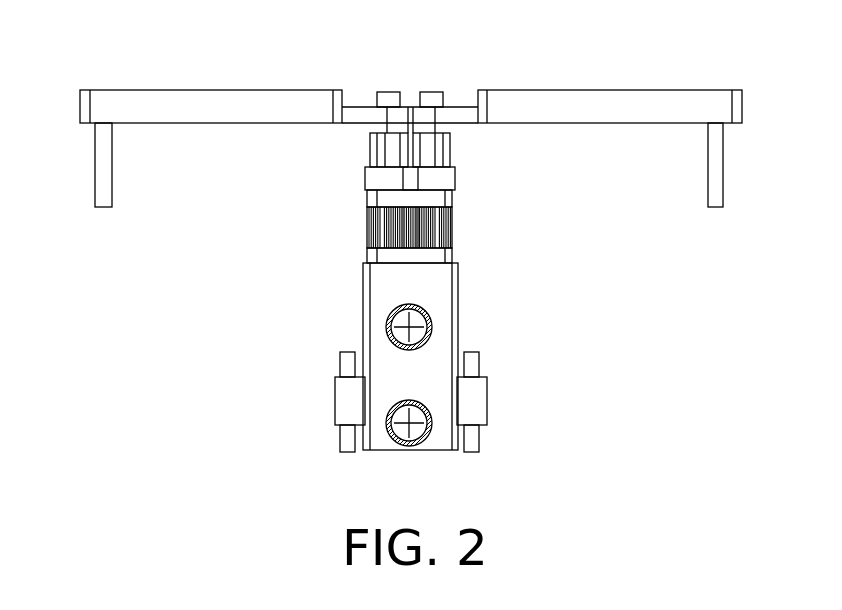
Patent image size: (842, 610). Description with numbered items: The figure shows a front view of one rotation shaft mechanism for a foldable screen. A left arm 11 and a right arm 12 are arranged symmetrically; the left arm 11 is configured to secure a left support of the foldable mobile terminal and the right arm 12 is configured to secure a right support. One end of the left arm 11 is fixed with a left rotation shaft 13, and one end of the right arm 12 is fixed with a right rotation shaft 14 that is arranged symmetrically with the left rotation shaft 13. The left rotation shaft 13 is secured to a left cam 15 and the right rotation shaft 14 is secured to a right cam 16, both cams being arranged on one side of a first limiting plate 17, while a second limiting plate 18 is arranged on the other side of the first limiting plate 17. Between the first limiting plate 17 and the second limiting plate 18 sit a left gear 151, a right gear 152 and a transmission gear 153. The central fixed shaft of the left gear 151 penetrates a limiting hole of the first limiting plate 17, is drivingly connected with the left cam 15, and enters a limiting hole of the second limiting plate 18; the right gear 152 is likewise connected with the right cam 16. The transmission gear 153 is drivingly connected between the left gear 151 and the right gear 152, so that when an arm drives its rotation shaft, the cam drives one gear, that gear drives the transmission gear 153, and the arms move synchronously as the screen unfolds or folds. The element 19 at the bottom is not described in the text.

The left arm 11 is at (208, 90).
The right arm 12 is at (610, 90).
The left rotation shaft 13 is at (370, 137).
The right rotation shaft 14 is at (450, 138).
The left cam 15 is at (365, 168).
The right cam 16 is at (455, 170).
The first limiting plate 17 is at (453, 195).
The left gear 151 is at (367, 228).
The right gear 152 is at (455, 228).
The transmission gear 153 is at (403, 250).
The second limiting plate 18 is at (365, 263).
The fastening assembly 19 is at (388, 450).